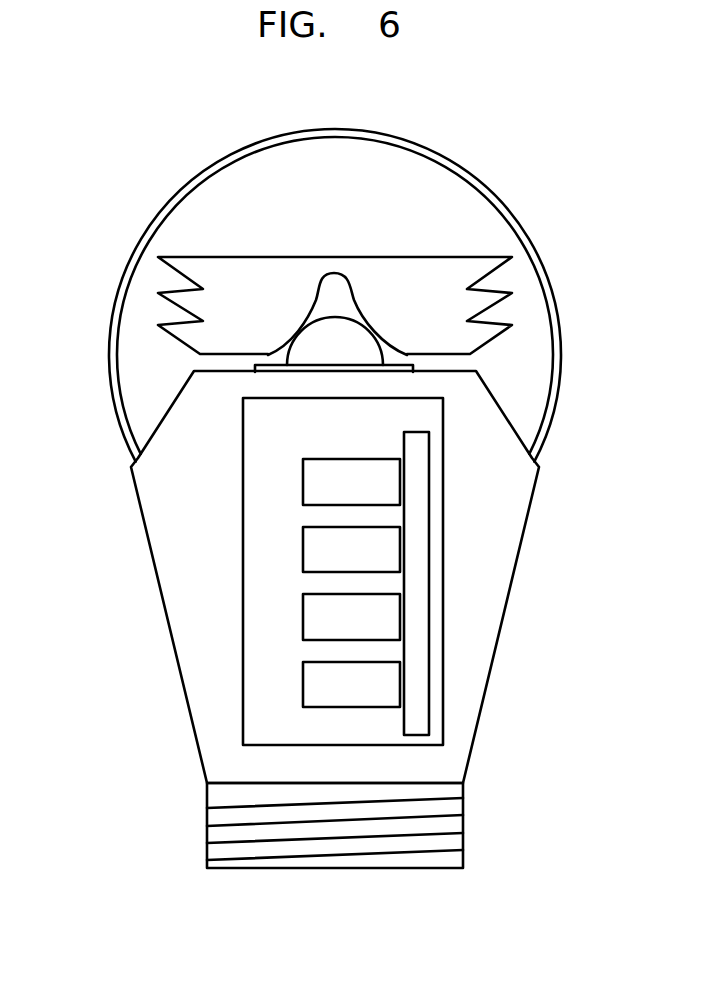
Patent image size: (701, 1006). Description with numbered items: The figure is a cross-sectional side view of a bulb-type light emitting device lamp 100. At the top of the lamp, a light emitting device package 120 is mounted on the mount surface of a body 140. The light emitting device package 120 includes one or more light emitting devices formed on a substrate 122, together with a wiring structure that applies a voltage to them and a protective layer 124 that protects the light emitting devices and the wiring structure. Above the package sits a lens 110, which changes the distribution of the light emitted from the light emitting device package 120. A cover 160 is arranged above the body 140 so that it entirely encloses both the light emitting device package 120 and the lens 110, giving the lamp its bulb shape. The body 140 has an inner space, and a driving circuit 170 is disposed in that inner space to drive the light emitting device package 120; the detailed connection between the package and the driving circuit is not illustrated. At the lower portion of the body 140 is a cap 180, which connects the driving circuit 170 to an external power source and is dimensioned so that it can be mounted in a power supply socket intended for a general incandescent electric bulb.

The bulb-type light emitting device lamp 100 is at (541, 184).
The lens 110 is at (404, 266).
The light emitting device package 120 is at (258, 351).
The substrate 122 is at (388, 352).
The protective layer 124 is at (367, 341).
The body 140 is at (498, 584).
The cover 160 is at (545, 269).
The driving circuit 170 is at (420, 684).
The cap 180 is at (458, 815).